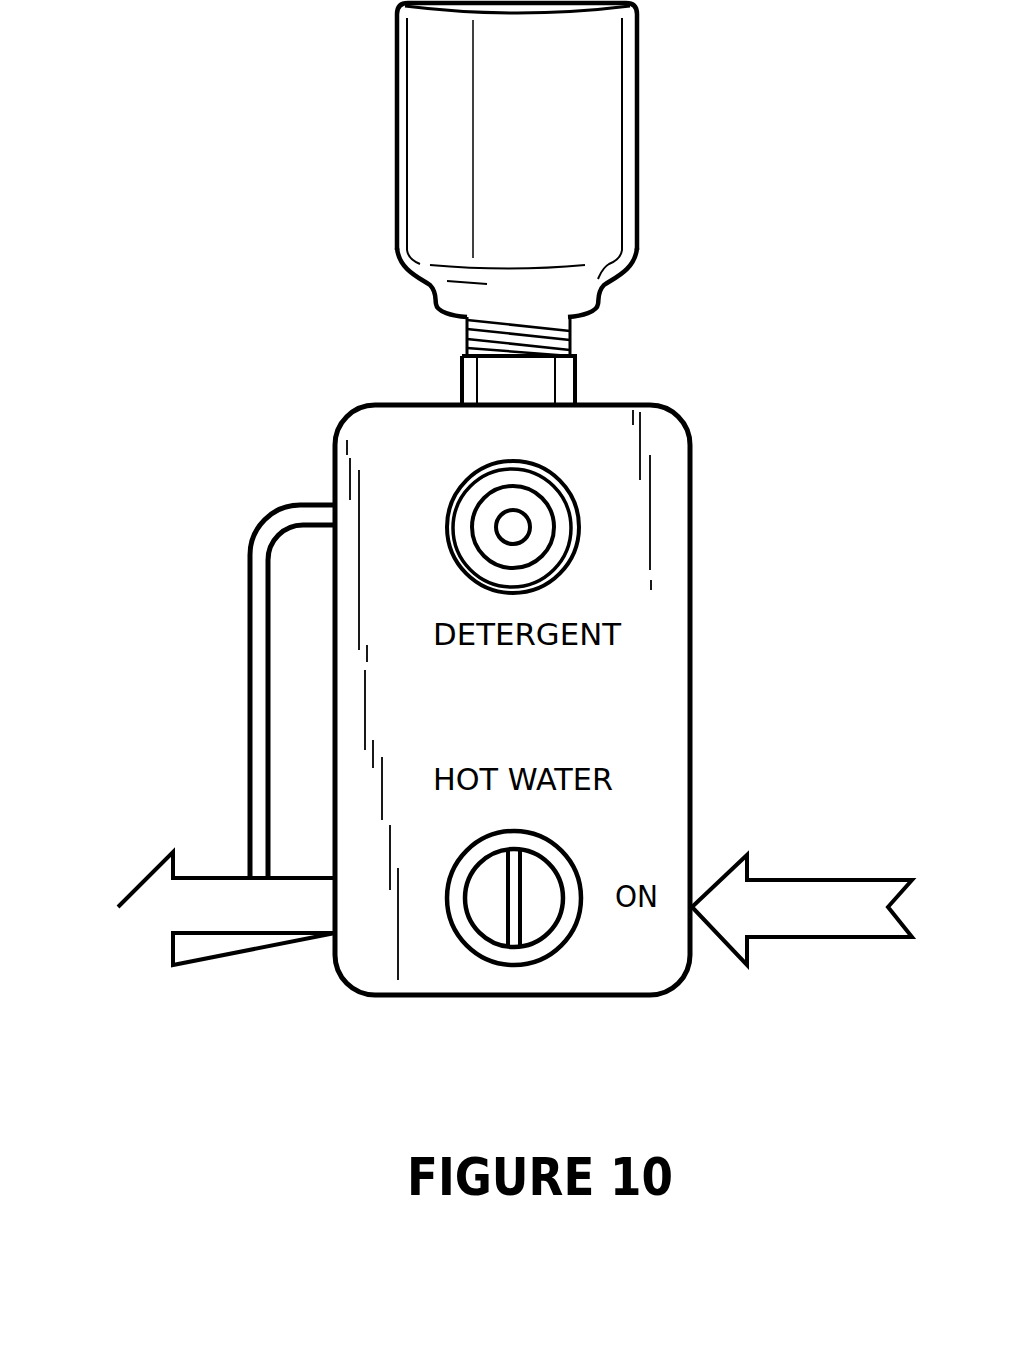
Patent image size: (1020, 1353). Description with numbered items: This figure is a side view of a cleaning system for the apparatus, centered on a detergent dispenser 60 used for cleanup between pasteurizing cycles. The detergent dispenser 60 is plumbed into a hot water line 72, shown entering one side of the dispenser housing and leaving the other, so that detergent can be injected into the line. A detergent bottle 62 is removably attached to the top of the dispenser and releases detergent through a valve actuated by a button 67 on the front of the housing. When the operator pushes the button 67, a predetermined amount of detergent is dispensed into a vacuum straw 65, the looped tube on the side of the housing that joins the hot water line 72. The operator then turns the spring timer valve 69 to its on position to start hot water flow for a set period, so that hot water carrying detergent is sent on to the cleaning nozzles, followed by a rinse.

The detergent dispenser 60 is at (156, 163).
The detergent bottle 62 is at (638, 127).
The vacuum straw 65 is at (248, 570).
The button 67 is at (582, 544).
The spring timer valve 69 is at (565, 847).
The hot water line 72 is at (237, 938).